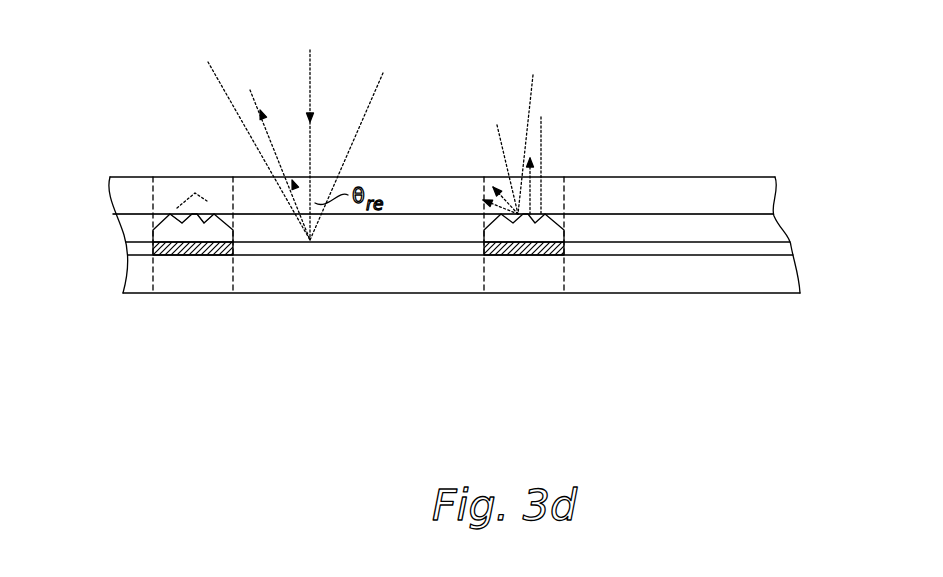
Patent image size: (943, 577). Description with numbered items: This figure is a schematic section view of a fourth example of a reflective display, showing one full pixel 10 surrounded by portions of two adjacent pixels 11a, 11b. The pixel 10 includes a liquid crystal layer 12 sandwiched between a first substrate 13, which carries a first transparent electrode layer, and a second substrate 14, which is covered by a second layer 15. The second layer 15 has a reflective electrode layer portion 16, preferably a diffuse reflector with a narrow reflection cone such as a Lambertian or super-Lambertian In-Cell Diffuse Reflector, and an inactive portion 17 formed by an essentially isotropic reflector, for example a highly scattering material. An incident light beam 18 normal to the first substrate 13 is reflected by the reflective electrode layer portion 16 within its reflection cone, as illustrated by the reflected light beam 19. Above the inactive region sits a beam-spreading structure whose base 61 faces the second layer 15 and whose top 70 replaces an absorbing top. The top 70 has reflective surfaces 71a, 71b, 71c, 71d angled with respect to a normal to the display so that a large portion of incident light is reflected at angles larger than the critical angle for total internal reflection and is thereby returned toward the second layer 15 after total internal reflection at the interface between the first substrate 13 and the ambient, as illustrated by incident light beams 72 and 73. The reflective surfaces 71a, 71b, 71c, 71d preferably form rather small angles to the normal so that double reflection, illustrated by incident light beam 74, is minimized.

The pixel 10 is at (564, 293).
The adjacent pixel 11a is at (156, 306).
The adjacent pixel 11b is at (663, 297).
The liquid crystal layer 12 is at (248, 226).
The first substrate 13 is at (250, 190).
The second substrate 14 is at (263, 277).
The second layer 15 is at (795, 247).
The reflective electrode layer portion 16 is at (312, 248).
The inactive portion 17 is at (528, 255).
The incident light beam 18 is at (312, 80).
The reflected light beam 19 is at (248, 92).
The base 61 is at (503, 255).
The top 70 is at (555, 217).
The reflective surface 71a is at (180, 214).
The reflective surface 71b is at (187, 214).
The reflective surface 71c is at (200, 214).
The reflective surface 71d is at (212, 214).
The incident light beam 72 is at (493, 130).
The incident light beam 73 is at (527, 108).
The incident light beam 74 is at (543, 135).